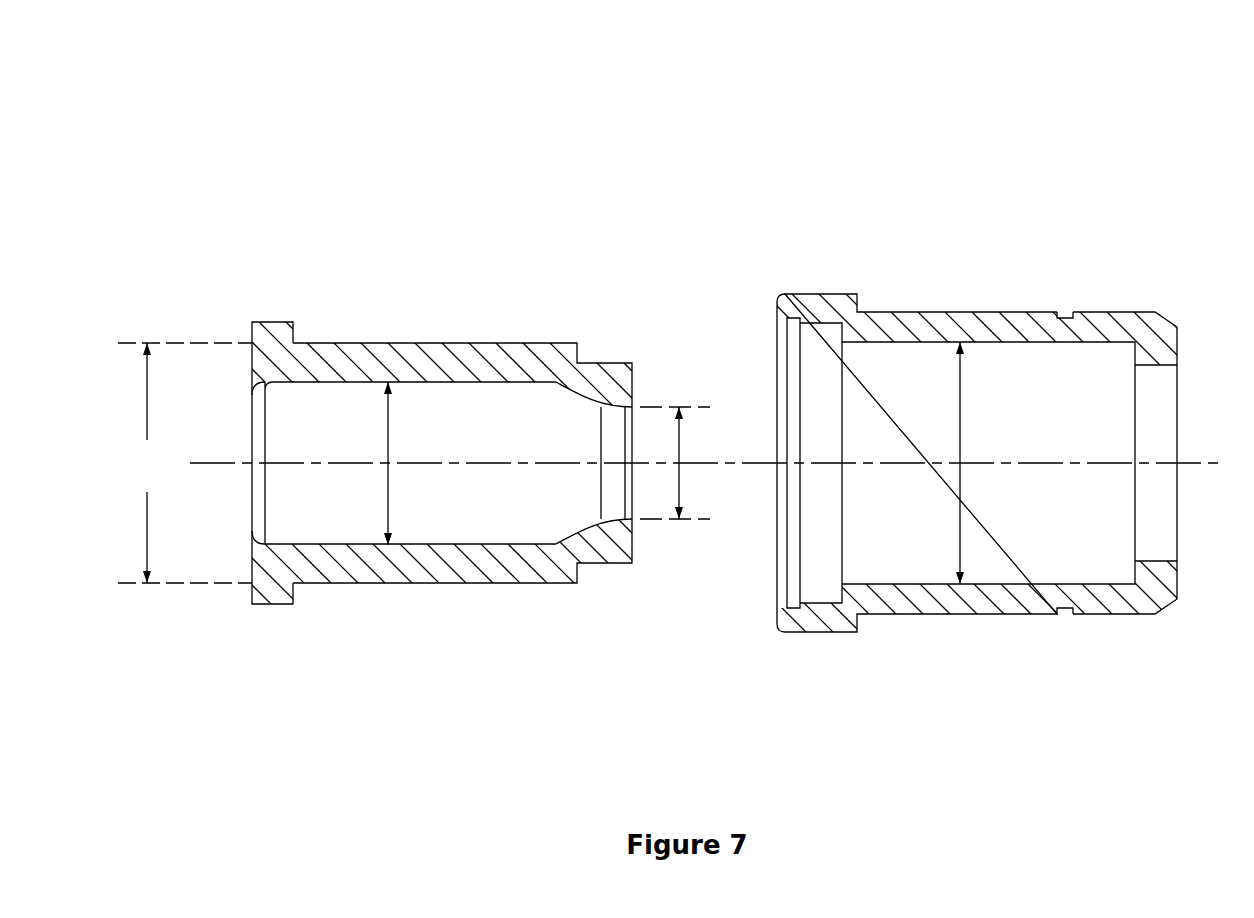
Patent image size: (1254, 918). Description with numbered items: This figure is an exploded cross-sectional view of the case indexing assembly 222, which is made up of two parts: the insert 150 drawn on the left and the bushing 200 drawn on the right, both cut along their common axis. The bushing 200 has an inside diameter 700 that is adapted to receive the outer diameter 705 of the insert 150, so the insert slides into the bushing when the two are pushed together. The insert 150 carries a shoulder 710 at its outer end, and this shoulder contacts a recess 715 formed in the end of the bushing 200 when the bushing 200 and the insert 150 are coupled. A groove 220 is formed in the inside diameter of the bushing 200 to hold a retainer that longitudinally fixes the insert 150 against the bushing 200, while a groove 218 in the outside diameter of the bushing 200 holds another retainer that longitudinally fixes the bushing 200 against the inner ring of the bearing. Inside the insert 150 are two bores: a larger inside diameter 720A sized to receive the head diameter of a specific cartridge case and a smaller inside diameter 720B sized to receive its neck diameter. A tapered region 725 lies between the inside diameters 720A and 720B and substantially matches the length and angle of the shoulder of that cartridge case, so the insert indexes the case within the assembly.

The insert 150 is at (233, 247).
The bushing 200 is at (908, 233).
The case indexing assembly 222 is at (682, 150).
The shoulder 710 is at (294, 322).
The tapered region 725 is at (572, 400).
The outer diameter 705 is at (185, 463).
The inside diameter 720A is at (388, 545).
The inside diameter 720B is at (679, 519).
The recess 715 is at (835, 336).
The groove 220 is at (797, 305).
The groove 218 is at (1068, 315).
The inside diameter 700 is at (960, 584).